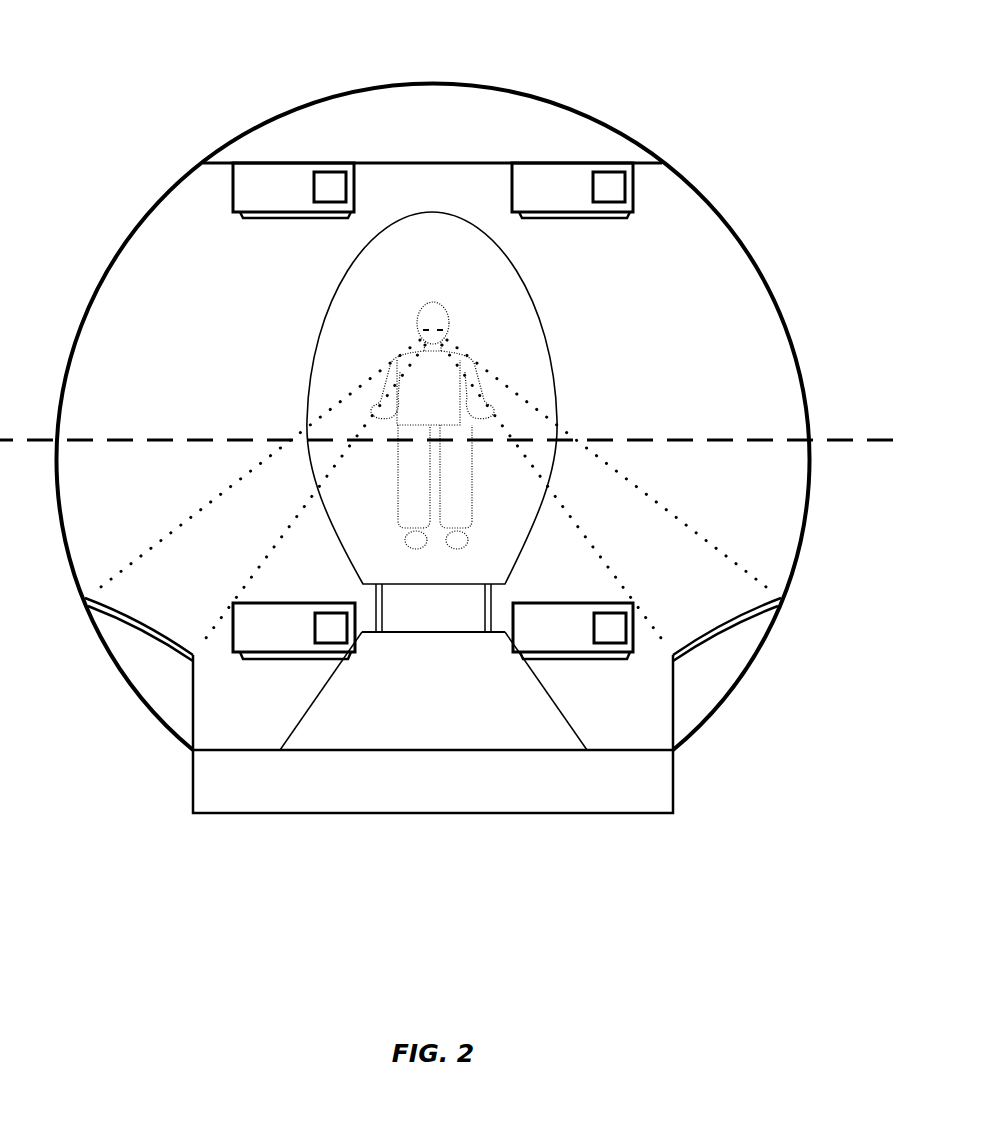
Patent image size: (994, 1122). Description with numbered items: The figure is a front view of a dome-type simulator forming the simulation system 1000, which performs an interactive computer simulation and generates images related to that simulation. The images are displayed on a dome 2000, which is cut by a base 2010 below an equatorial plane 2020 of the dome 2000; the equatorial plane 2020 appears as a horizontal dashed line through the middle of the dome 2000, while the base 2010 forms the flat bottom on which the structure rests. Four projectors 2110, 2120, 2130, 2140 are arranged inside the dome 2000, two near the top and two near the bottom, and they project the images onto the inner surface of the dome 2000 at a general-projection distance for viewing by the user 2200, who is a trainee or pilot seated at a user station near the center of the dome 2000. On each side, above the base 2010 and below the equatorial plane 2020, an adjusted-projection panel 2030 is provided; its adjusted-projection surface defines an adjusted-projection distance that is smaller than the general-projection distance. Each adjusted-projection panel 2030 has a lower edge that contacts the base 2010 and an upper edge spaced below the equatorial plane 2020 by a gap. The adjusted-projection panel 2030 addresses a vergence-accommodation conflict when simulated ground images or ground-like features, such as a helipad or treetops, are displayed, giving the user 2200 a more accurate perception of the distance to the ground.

The simulation system 1000 is at (127, 90).
The dome 2000 is at (738, 232).
The base 2010 is at (333, 788).
The equatorial plane 2020 is at (842, 440).
The adjusted-projection panel 2030 is at (160, 678).
The projector 2110 is at (251, 198).
The projector 2120 is at (530, 198).
The projector 2130 is at (251, 638).
The projector 2140 is at (531, 638).
The user 2200 is at (413, 380).